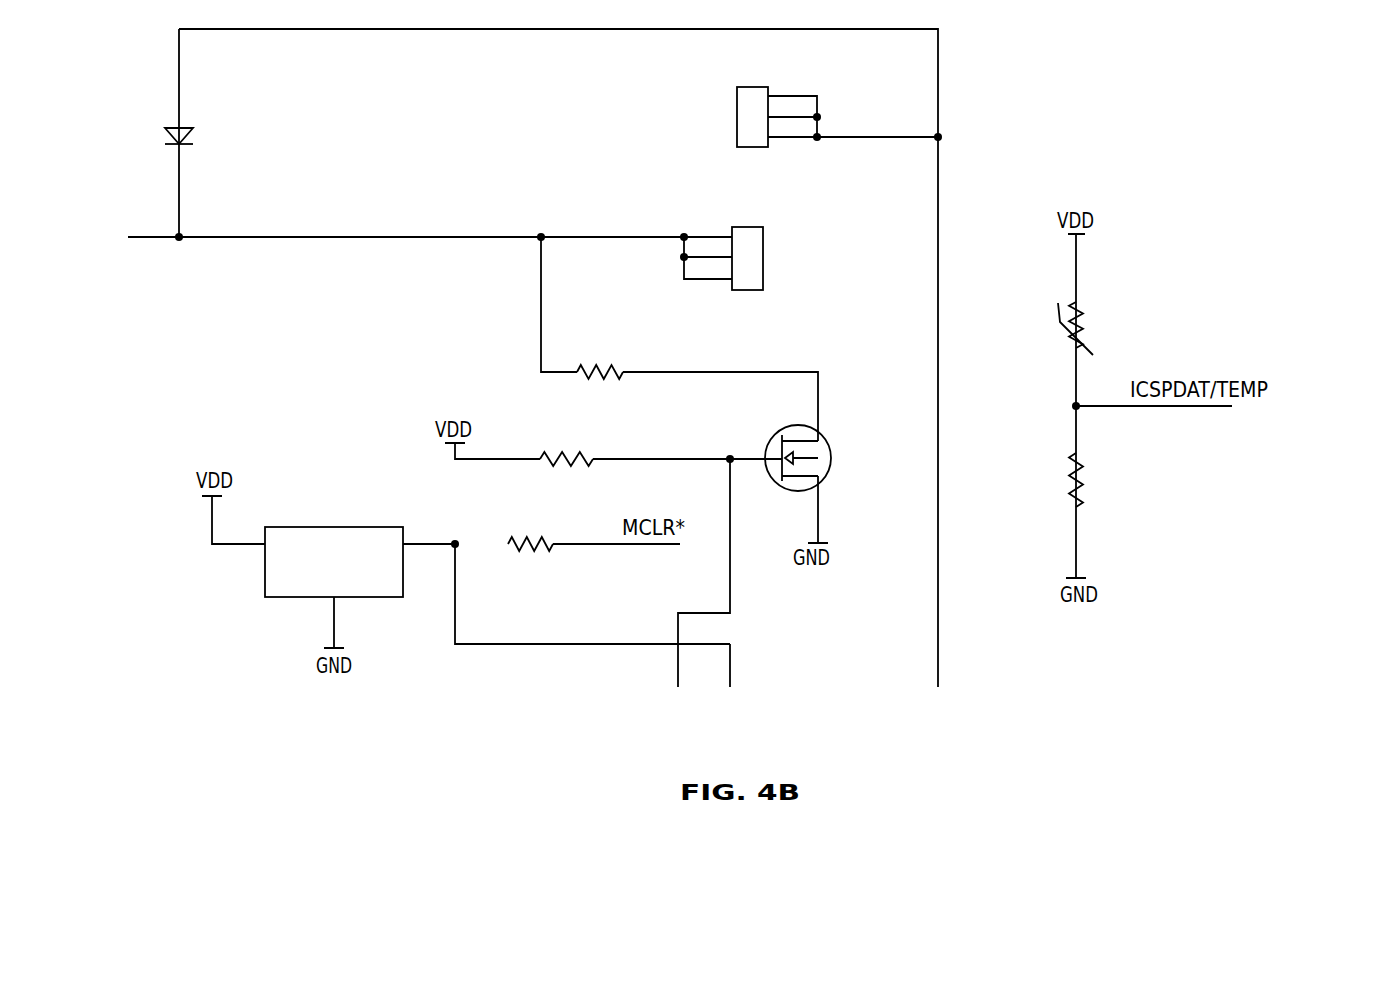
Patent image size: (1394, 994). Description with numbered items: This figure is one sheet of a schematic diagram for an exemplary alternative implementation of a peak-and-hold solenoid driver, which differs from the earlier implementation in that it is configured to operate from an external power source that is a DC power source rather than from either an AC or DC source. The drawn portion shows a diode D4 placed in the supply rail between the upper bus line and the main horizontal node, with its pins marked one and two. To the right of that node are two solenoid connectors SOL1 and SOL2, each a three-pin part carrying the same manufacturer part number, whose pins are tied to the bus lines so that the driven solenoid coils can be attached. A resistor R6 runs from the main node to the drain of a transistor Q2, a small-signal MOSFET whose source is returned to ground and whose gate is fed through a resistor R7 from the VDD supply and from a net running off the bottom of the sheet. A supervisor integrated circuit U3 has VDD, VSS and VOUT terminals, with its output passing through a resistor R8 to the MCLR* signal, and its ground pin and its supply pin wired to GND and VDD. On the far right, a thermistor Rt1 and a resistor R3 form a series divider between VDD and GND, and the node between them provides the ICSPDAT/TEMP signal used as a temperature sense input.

The diode SK810L D4 is at (214, 142).
The solenoid connector 283614-001 SOL1 is at (783, 119).
The solenoid connector 283614-001 SOL2 is at (763, 257).
The resistor 200 Ohm R6 is at (620, 370).
The resistor 1M R7 is at (594, 466).
The resistor 1.0K R8 is at (571, 561).
The voltage supervisor MCP111-475 U3 is at (340, 561).
The MOSFET BSS123 Q2 is at (825, 458).
The thermistor 10K Rt1 is at (1206, 323).
The resistor 14.3K R3 is at (1194, 480).